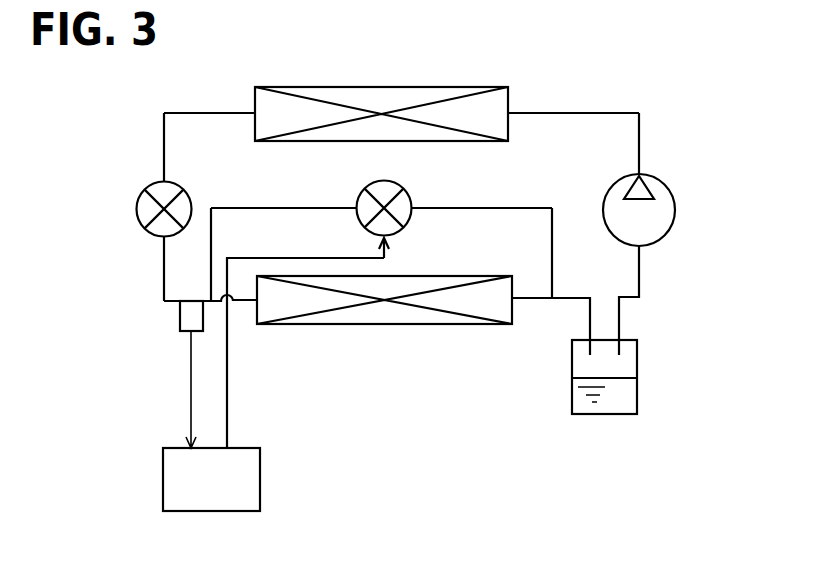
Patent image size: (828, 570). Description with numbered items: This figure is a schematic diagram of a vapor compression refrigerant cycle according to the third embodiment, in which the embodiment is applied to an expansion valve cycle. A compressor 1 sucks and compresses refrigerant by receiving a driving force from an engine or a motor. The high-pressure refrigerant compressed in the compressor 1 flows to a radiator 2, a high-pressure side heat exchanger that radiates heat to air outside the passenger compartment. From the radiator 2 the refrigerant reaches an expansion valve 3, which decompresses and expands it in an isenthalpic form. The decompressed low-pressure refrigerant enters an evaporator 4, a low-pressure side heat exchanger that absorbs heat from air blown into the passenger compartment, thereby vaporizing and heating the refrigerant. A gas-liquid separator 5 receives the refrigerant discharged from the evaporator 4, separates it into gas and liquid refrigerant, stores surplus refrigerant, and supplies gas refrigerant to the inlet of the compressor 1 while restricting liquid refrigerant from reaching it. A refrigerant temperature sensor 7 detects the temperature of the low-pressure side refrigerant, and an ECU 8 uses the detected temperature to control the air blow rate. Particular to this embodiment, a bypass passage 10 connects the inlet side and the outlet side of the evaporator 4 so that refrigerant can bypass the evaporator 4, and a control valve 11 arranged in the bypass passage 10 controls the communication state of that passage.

The compressor 1 is at (677, 210).
The radiator 2 is at (443, 87).
The expansion valve 3 is at (137, 208).
The evaporator 4 is at (446, 276).
The gas-liquid separator 5 is at (637, 383).
The refrigerant temperature sensor 7 is at (180, 313).
The ECU 8 is at (260, 482).
The bypass passage 10 is at (515, 208).
The control valve 11 is at (392, 185).